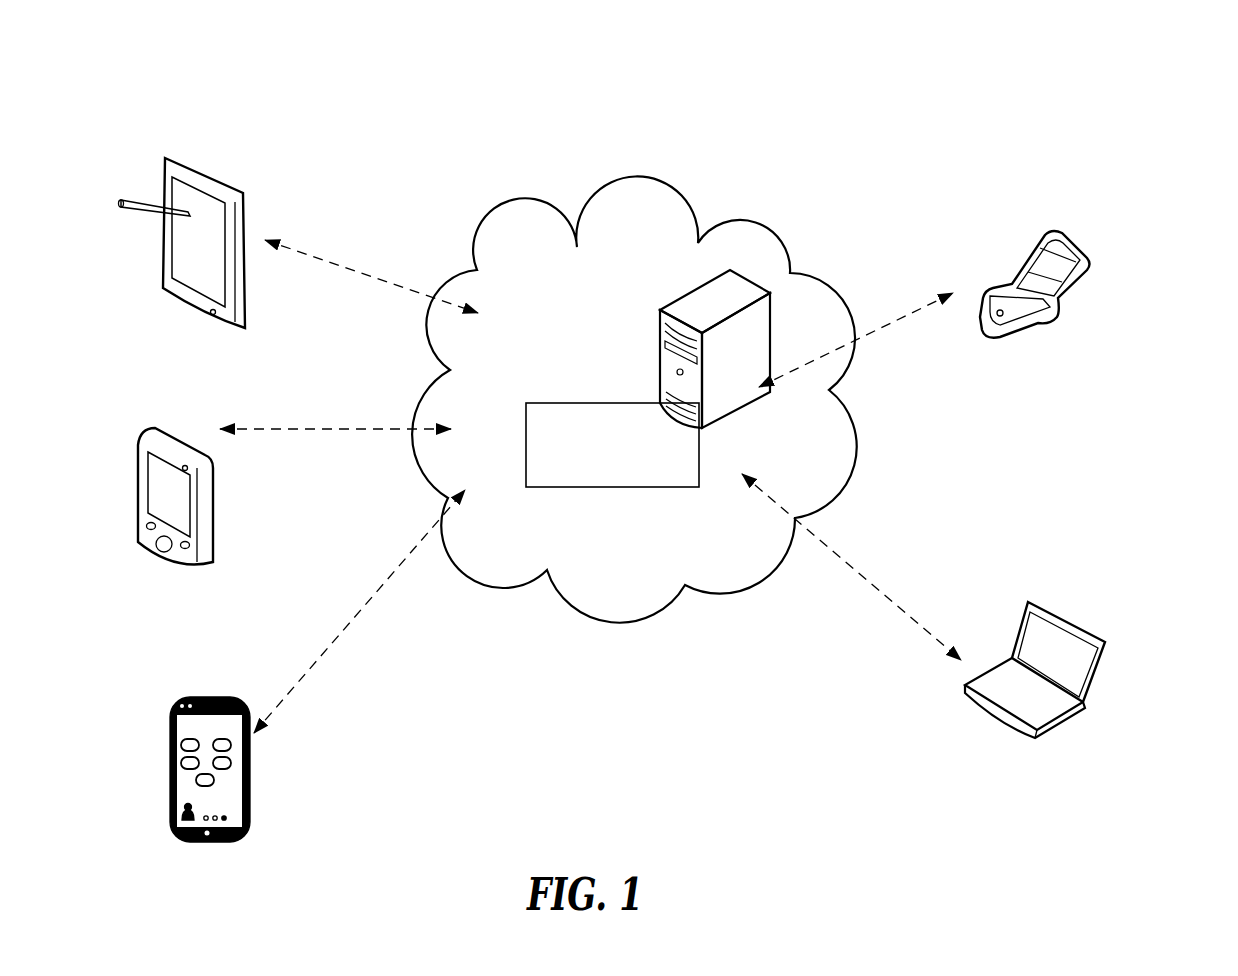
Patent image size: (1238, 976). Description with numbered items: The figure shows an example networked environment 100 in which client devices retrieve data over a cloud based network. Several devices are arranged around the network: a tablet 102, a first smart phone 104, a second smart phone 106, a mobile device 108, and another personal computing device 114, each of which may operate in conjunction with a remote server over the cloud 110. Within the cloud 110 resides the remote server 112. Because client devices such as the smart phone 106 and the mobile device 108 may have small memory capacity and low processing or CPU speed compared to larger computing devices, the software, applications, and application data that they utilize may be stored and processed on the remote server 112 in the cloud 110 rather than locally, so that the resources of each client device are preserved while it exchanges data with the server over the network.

The system environment 100 is at (1144, 88).
The tablet 102 is at (166, 148).
The smart phone 104 is at (166, 413).
The smart phone 106 is at (201, 692).
The mobile device 108 is at (1080, 220).
The cloud 110 is at (630, 179).
The remote server 112 is at (619, 385).
The personal computing device 114 is at (1062, 591).